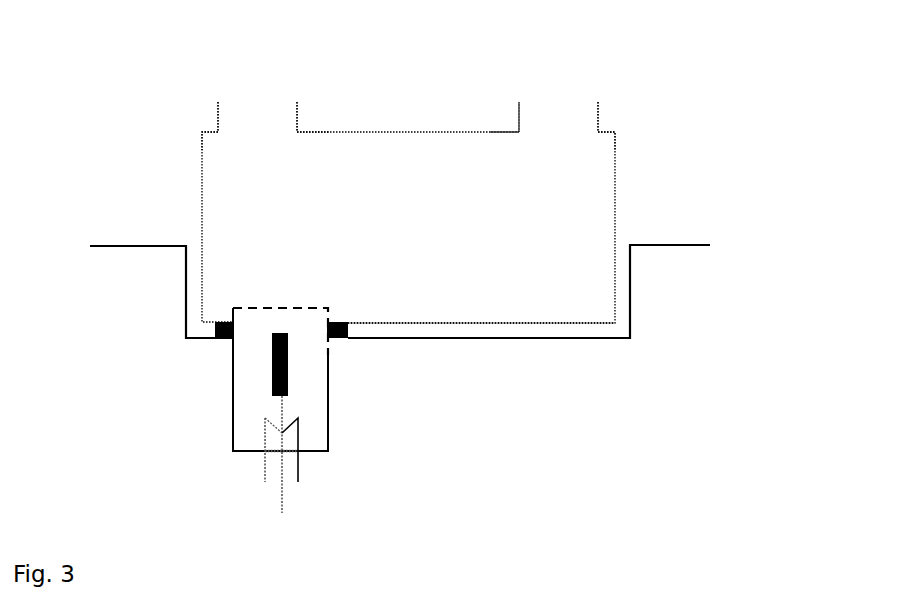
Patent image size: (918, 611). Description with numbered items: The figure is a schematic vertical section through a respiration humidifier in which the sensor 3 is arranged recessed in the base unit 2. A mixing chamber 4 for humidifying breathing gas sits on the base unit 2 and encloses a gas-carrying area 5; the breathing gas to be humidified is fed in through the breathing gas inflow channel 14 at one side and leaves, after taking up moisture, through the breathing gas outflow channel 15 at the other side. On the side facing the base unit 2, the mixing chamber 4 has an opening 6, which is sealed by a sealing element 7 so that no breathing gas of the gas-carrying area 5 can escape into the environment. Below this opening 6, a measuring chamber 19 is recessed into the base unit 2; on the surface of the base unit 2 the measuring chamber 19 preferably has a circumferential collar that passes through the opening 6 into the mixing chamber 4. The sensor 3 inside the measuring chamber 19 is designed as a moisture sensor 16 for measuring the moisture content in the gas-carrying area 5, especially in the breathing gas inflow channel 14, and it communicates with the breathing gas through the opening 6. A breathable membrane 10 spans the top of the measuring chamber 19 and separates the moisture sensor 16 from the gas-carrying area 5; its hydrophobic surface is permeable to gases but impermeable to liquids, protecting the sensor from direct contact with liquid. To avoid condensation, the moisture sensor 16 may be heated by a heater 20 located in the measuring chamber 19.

The base unit 2 is at (662, 260).
The sensor 3 is at (191, 423).
The mixing chamber 4 is at (527, 313).
The gas-carrying area 5 is at (502, 193).
The opening 6 is at (233, 338).
The sealing element 7 is at (250, 325).
The breathable membrane 10 is at (245, 290).
The breathing gas inflow channel 14 is at (257, 107).
The breathing gas outflow channel 15 is at (557, 107).
The moisture sensor 16 is at (295, 357).
The measuring chamber 19 is at (265, 435).
The heater 20 is at (252, 420).